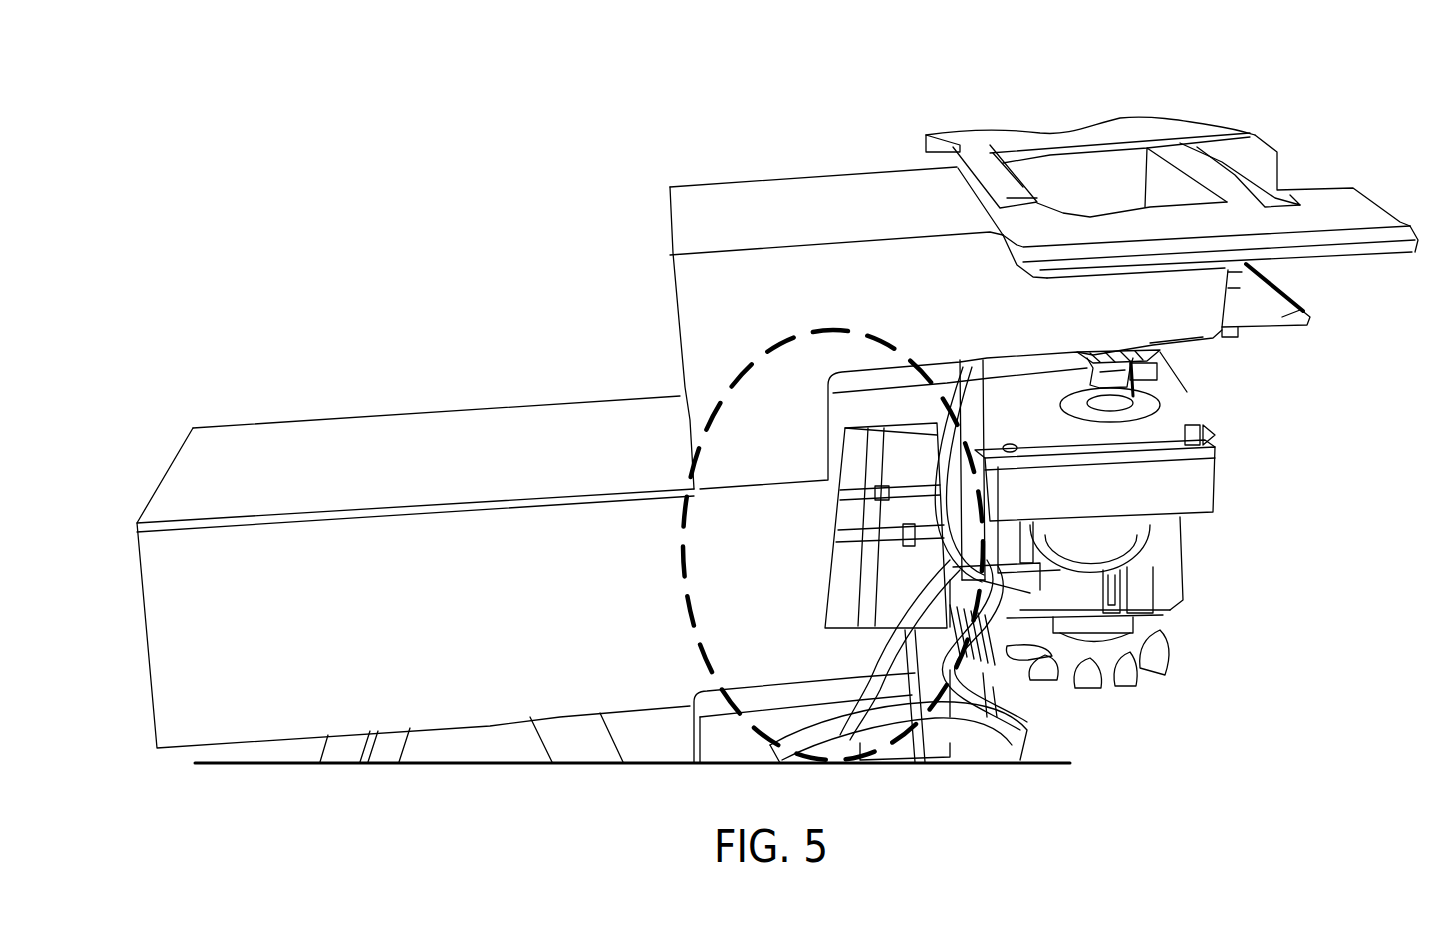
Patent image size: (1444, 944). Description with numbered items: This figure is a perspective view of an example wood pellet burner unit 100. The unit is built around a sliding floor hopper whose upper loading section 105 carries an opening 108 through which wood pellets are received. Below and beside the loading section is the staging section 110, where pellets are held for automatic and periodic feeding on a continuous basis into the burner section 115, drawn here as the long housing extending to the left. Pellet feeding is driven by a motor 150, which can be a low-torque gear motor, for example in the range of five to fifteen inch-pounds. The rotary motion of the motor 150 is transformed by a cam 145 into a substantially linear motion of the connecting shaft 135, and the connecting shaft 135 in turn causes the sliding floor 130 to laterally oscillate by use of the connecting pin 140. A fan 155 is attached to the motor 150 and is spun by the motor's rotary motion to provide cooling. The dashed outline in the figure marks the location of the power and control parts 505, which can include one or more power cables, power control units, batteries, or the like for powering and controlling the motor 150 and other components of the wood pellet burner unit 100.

The wood pellet burner unit 100 is at (484, 115).
The upper loading section 105 is at (1276, 205).
The opening 108 is at (1098, 167).
The staging section 110 is at (852, 197).
The burner section 115 is at (548, 402).
The sliding floor 130 is at (1300, 318).
The connecting shaft 135 is at (1167, 355).
The connecting pin 140 is at (1238, 330).
The cam 145 is at (1158, 398).
The motor 150 is at (1207, 485).
The fan 155 is at (1167, 673).
The power and control parts 505 is at (855, 546).